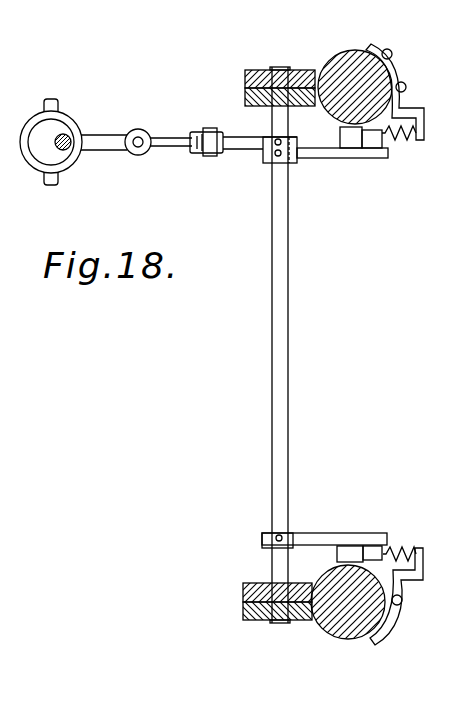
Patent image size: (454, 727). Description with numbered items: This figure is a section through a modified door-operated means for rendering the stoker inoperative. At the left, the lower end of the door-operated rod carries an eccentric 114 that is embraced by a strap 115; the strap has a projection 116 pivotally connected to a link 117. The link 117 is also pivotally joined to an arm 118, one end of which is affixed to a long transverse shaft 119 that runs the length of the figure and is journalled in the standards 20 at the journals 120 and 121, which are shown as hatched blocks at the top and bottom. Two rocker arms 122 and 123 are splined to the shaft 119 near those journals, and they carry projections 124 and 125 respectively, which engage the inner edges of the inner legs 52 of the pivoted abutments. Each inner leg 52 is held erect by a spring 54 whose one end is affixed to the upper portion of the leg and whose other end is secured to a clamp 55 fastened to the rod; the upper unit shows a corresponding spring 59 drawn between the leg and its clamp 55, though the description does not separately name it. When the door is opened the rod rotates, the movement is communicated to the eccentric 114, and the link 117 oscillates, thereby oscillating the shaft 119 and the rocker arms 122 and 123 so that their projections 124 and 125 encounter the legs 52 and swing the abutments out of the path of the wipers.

The standard 20 is at (252, 68).
The inner leg 52 is at (347, 148).
The spring 54 is at (403, 553).
The clamp 55 is at (397, 72).
The spring 59 is at (403, 143).
The eccentric 114 is at (35, 149).
The strap 115 is at (70, 170).
The projection 116 is at (97, 140).
The link 117 is at (172, 147).
The arm 118 is at (244, 142).
The transverse shaft 119 is at (282, 329).
The journal 120 is at (297, 67).
The journal 121 is at (290, 625).
The rocker arm 122 is at (365, 158).
The rocker arm 123 is at (308, 533).
The projection 124 is at (373, 148).
The projection 125 is at (374, 546).